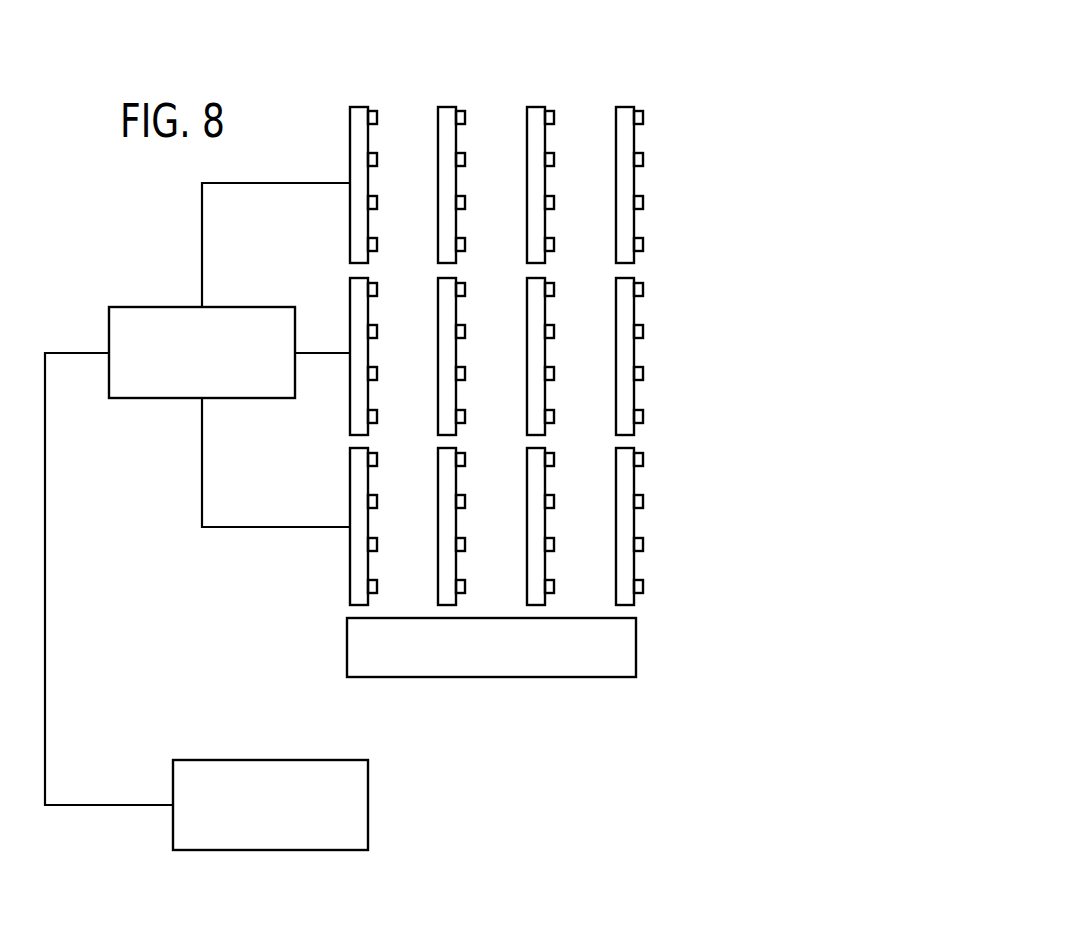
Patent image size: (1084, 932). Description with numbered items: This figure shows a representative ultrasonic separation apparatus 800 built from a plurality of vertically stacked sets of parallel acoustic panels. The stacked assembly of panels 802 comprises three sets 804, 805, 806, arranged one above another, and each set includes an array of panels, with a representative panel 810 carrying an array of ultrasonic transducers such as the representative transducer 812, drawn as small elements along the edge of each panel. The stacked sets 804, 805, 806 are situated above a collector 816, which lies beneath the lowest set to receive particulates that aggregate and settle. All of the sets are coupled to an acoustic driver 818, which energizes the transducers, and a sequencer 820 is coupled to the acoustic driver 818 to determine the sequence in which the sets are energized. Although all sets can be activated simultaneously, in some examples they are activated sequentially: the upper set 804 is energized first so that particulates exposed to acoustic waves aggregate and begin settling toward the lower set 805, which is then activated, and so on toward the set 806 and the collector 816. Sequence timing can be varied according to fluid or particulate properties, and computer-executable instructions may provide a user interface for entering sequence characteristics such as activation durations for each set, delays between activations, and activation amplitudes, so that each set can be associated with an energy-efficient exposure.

The apparatus 800 is at (656, 773).
The sensor array 802 is at (849, 620).
The set of acoustic panels 804 is at (622, 136).
The set of acoustic panels 805 is at (748, 278).
The set of acoustic panels 806 is at (748, 598).
The sensor element substrate 810 is at (439, 107).
The transducer 812 is at (679, 85).
The collector 816 is at (636, 646).
The acoustic driver 818 is at (170, 398).
The sequencer 820 is at (368, 790).